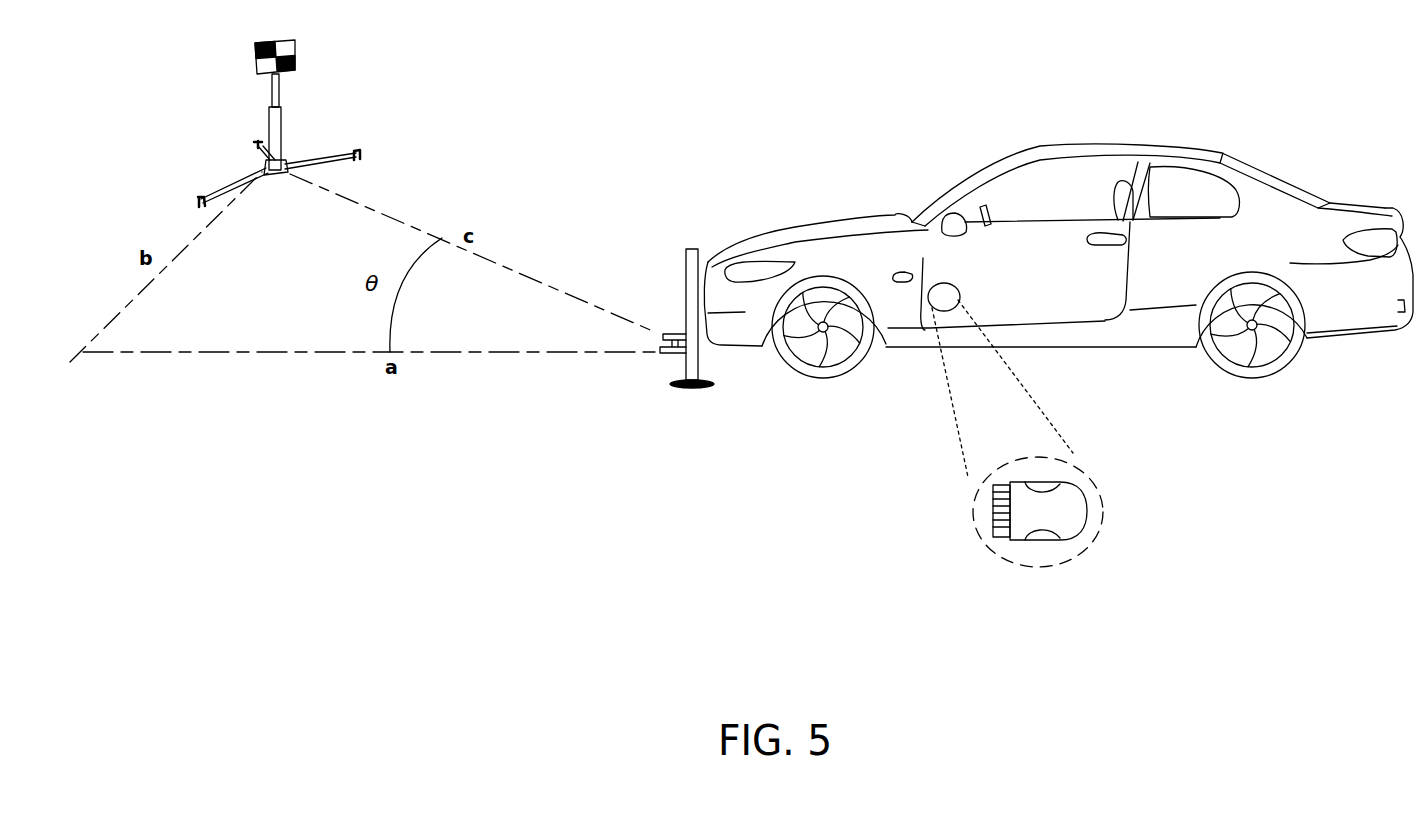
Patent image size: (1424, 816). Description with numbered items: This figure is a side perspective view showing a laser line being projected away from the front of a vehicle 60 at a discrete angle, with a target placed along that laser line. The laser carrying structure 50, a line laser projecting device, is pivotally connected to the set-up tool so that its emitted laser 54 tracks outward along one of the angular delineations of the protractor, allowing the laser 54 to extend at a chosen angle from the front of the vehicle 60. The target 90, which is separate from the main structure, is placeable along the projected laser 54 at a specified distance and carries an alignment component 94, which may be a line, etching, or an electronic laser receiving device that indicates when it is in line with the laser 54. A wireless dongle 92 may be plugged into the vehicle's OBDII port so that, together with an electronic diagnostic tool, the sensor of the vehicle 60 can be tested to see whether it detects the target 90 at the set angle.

The target 90 is at (305, 101).
The alignment component 94 is at (283, 180).
The laser 54 is at (424, 212).
The laser carrying structure 50 is at (656, 313).
The vehicle 60 is at (1058, 287).
The wireless dongle 92 is at (1066, 508).